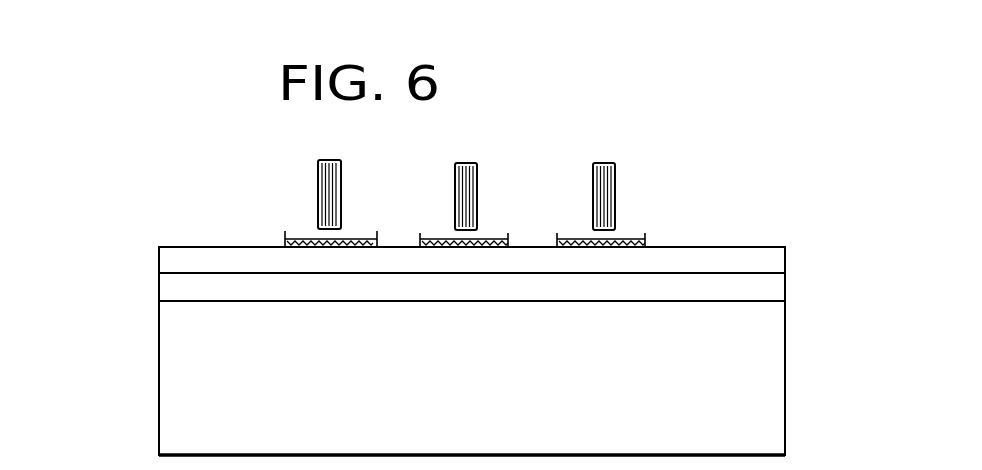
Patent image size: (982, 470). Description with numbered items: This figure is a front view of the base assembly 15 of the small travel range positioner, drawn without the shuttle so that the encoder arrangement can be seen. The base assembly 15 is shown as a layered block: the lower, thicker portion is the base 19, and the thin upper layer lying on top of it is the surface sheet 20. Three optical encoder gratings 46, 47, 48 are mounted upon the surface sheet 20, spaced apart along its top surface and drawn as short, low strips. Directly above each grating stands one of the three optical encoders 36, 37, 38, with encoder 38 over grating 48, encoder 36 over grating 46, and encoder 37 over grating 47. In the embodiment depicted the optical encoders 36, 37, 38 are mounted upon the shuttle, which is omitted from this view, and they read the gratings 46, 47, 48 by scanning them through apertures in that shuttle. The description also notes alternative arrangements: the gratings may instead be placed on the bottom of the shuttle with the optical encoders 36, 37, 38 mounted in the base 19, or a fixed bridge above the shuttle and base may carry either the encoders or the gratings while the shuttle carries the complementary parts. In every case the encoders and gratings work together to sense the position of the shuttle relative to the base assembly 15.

The base assembly 15 is at (156, 350).
The base 19 is at (786, 382).
The surface sheet 20 is at (755, 247).
The optical encoder 36 is at (468, 163).
The optical encoder 37 is at (606, 163).
The optical encoder 38 is at (323, 161).
The optical encoder grating 46 is at (492, 238).
The optical encoder grating 47 is at (630, 238).
The optical encoder grating 48 is at (355, 237).